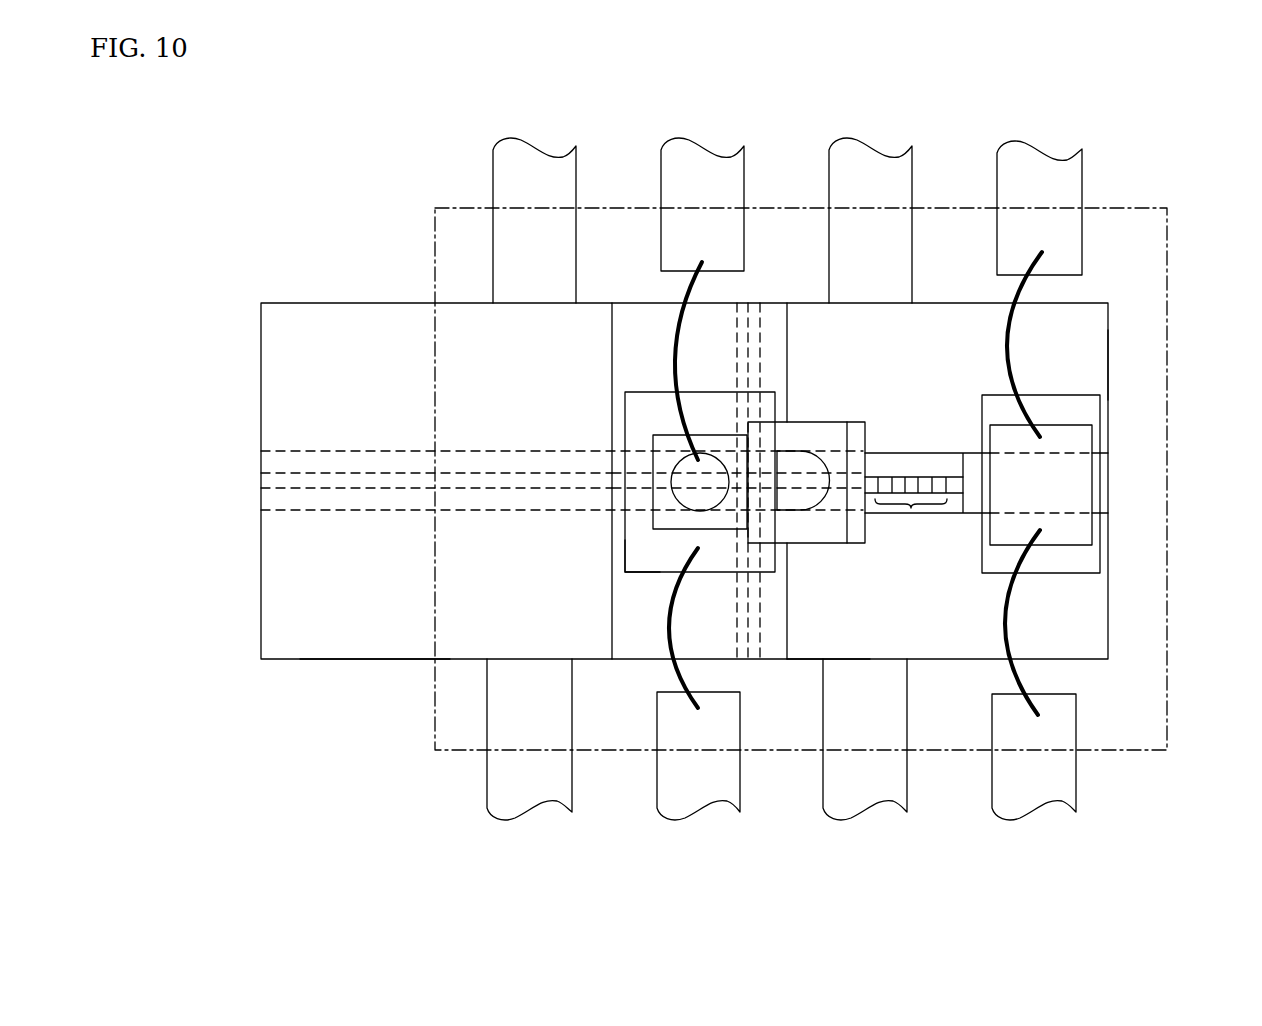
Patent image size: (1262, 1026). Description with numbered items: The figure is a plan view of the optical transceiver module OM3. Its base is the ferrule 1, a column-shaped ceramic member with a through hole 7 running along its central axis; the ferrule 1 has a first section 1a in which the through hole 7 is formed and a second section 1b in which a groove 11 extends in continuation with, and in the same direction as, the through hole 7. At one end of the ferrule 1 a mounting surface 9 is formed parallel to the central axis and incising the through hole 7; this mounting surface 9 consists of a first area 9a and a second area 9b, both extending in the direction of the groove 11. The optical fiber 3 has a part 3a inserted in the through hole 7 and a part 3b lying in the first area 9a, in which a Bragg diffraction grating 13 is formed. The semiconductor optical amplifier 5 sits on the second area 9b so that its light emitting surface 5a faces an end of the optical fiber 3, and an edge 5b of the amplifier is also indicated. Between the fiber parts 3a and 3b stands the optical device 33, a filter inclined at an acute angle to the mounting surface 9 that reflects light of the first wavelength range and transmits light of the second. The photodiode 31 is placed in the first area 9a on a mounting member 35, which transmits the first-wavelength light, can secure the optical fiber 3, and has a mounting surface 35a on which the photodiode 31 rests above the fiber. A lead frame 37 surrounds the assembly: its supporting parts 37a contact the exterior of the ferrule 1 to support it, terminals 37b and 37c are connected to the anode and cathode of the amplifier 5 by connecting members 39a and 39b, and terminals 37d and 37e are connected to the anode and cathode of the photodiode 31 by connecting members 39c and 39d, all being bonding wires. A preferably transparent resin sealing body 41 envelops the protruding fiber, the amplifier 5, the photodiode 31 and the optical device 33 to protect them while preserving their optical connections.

The optical transceiver module OM3 is at (280, 218).
The ferrule 1 is at (259, 600).
The first section 1a is at (373, 631).
The second section 1b is at (800, 663).
The optical fiber 3 is at (500, 445).
The part of the optical fiber 3a is at (648, 447).
The part of the optical fiber 3b is at (907, 452).
The semiconductor optical amplifier 5 is at (1085, 408).
The light emitting surface 5a is at (985, 497).
The holder bottom edge 5b is at (1095, 492).
The through hole 7 is at (413, 510).
The mounting surface 9 is at (962, 397).
The first area 9a is at (817, 328).
The second area 9b is at (1090, 347).
The groove 11 is at (1110, 465).
The Bragg diffraction grating 13 is at (908, 510).
The photodiode 31 is at (714, 434).
The optical device 33 is at (822, 548).
The mounting member 35 is at (640, 390).
The mounting surface 35a is at (630, 549).
The lead frame 37 is at (417, 108).
The supporting parts 37a is at (493, 182).
The terminal 37b is at (997, 185).
The terminal 37c is at (1076, 770).
The terminal 37d is at (661, 182).
The terminal 37e is at (740, 770).
The connecting member 39a is at (1006, 350).
The connecting member 39b is at (1005, 628).
The connecting member 39c is at (673, 348).
The connecting member 39d is at (672, 627).
The resin sealing body 41 is at (1168, 700).